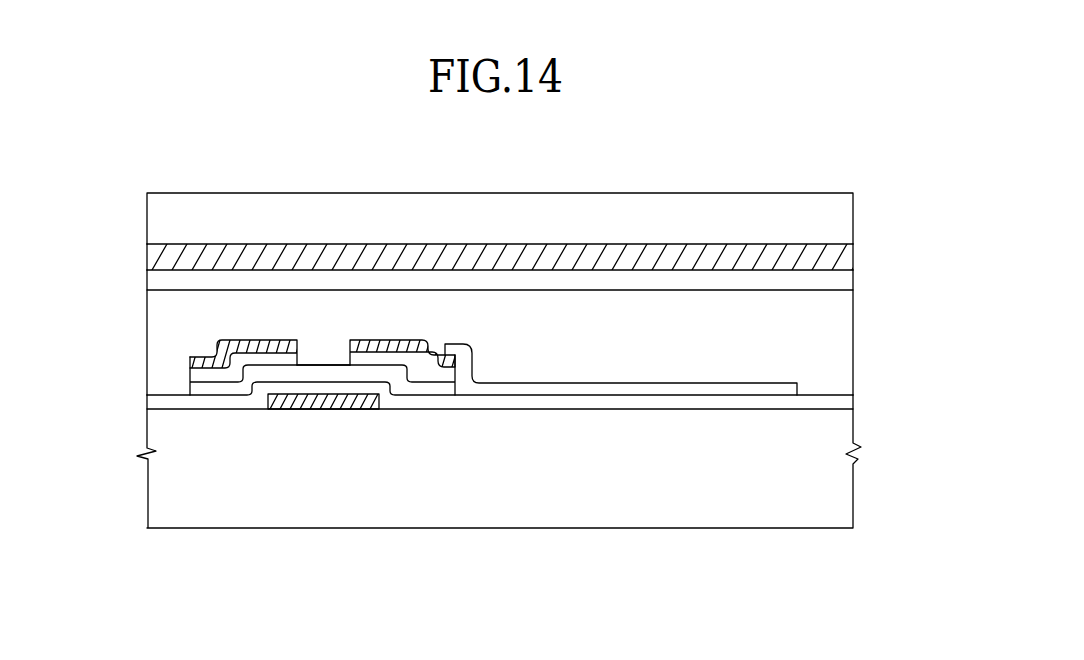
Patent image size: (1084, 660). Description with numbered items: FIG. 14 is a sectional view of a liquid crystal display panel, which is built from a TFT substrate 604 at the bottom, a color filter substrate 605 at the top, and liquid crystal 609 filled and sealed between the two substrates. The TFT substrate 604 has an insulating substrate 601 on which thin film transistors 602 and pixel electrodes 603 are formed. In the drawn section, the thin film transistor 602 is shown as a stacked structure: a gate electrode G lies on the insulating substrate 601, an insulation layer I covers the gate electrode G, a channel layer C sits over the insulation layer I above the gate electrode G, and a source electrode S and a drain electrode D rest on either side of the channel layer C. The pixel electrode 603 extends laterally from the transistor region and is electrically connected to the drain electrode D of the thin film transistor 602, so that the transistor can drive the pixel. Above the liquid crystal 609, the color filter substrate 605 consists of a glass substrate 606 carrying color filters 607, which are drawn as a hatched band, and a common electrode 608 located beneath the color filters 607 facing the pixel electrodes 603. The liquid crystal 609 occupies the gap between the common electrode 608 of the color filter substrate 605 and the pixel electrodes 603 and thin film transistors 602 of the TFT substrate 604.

The insulating substrate 601 is at (846, 480).
The thin film transistor 602 is at (313, 338).
The pixel electrode 603 is at (783, 388).
The TFT substrate 604 is at (139, 469).
The color filter substrate 605 is at (185, 223).
The glass substrate 606 is at (842, 209).
The color filter 607 is at (843, 252).
The common electrode 608 is at (843, 280).
The liquid crystal 609 is at (846, 322).
The source electrode S is at (188, 363).
The drain electrode D is at (386, 340).
The gate electrode G is at (337, 403).
The channel layer C is at (188, 390).
The insulation layer I is at (147, 405).